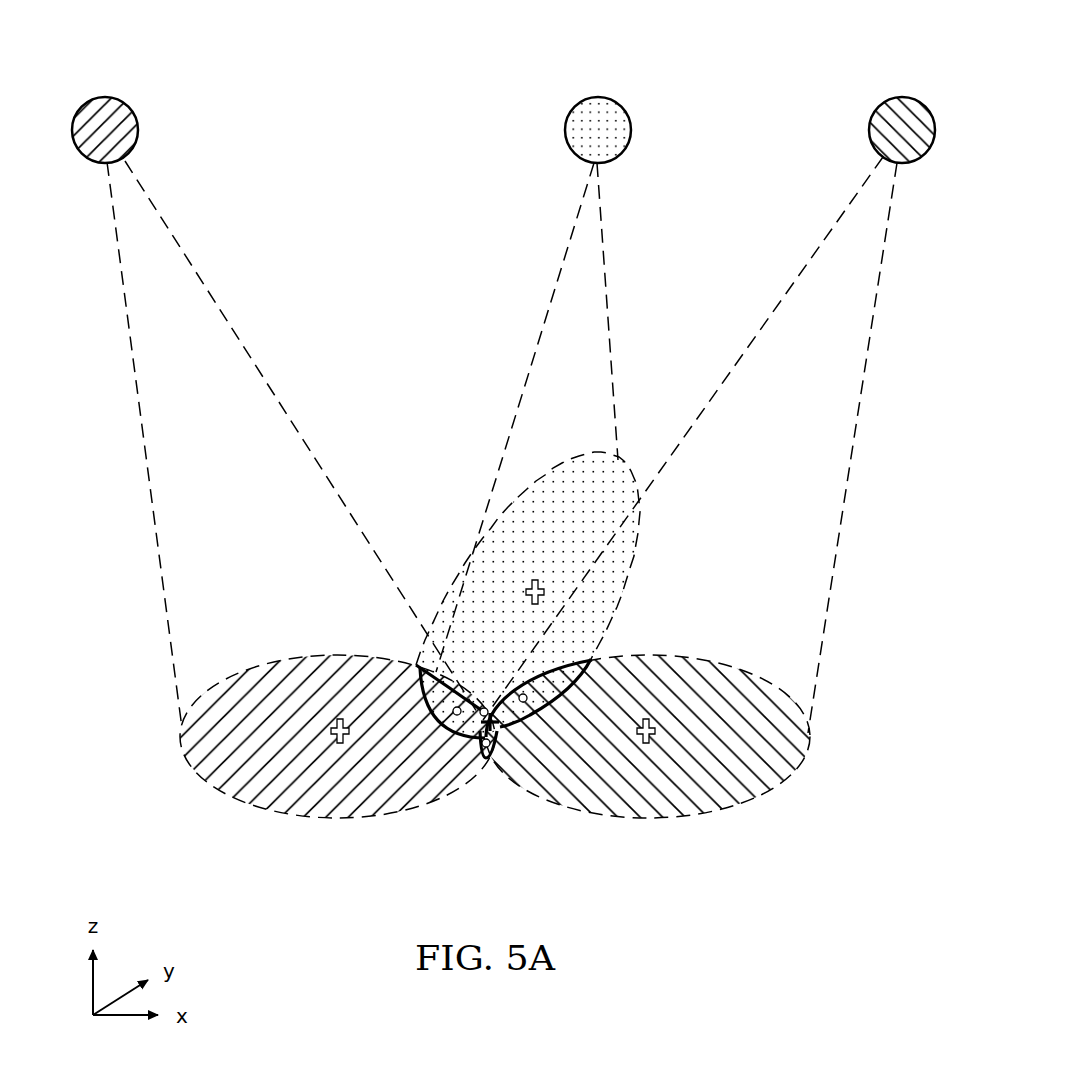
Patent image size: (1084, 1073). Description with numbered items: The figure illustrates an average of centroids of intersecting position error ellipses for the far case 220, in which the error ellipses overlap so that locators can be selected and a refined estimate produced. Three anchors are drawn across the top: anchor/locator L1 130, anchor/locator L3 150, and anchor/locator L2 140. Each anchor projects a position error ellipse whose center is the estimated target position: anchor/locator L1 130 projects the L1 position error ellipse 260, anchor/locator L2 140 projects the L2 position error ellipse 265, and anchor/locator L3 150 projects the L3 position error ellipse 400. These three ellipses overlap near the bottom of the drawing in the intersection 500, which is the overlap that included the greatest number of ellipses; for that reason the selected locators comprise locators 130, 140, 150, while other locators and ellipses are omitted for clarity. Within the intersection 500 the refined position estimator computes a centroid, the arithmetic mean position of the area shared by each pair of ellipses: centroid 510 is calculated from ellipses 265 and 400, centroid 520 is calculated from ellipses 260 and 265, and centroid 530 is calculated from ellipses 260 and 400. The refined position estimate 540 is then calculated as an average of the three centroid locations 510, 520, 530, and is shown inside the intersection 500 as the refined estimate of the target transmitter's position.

The anchor/locator L1 130 is at (105, 97).
The anchor/locator L3 150 is at (601, 97).
The anchor/locator L2 140 is at (903, 97).
The error ellipse 400 is at (644, 582).
The far case 220 is at (152, 736).
The error ellipse 260 is at (235, 803).
The error ellipse 265 is at (748, 808).
The intersection 500 is at (487, 797).
The centroid 510 is at (527, 696).
The centroid 520 is at (490, 740).
The centroid 530 is at (457, 716).
The refined position estimate 540 is at (498, 721).